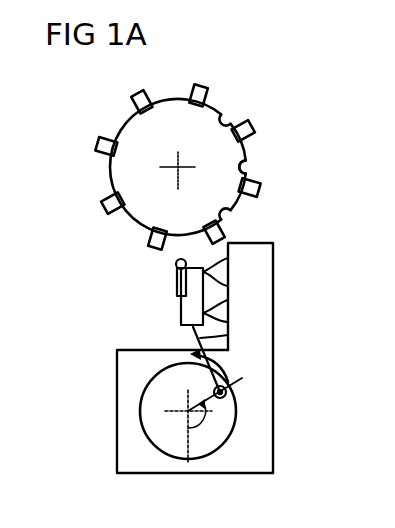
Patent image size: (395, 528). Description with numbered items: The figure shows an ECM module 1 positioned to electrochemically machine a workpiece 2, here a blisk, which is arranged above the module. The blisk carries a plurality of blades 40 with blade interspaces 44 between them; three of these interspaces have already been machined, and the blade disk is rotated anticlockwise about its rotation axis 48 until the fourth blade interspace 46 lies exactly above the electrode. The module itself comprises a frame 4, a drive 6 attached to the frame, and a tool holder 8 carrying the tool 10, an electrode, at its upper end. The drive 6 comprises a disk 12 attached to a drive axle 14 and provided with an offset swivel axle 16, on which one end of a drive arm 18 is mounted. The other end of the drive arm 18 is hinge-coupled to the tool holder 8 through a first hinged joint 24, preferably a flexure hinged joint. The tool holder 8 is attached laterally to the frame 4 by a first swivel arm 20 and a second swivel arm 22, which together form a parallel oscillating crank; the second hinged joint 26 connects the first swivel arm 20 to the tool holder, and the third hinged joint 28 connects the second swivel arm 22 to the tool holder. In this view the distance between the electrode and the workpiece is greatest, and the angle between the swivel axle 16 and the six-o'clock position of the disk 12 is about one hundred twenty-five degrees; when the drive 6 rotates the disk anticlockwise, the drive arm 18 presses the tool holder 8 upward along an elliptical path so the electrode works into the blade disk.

The ECM module 1 is at (321, 143).
The workpiece 2 is at (204, 114).
The blades 40 is at (254, 125).
The blade interspaces 44 is at (262, 158).
The rotation axis 48 is at (181, 162).
The fourth blade interspace 46 is at (162, 258).
The tool 10 is at (176, 281).
The tool holder 8 is at (182, 308).
The drive arm 18 is at (200, 338).
The third hinged joint 28 is at (228, 258).
The second swivel arm 22 is at (215, 279).
The second hinged joint 26 is at (228, 301).
The first swivel arm 20 is at (215, 310).
The first hinged joint 24 is at (228, 335).
The frame 4 is at (260, 459).
The drive 6 is at (255, 418).
The drive axle 14 is at (181, 425).
The disk 12 is at (205, 446).
The swivel axle 16 is at (226, 390).